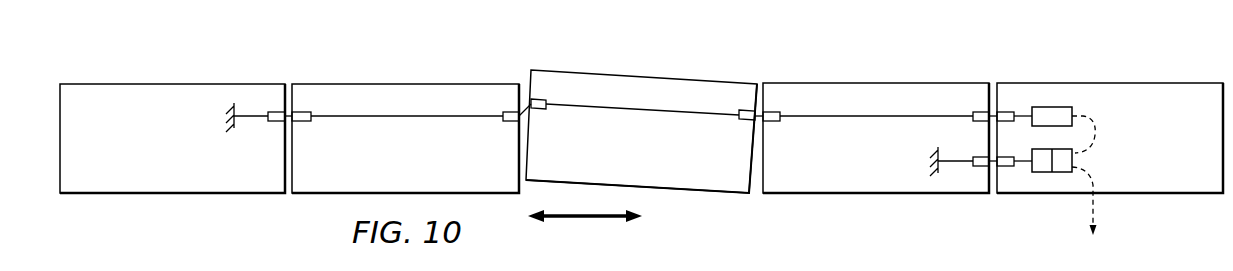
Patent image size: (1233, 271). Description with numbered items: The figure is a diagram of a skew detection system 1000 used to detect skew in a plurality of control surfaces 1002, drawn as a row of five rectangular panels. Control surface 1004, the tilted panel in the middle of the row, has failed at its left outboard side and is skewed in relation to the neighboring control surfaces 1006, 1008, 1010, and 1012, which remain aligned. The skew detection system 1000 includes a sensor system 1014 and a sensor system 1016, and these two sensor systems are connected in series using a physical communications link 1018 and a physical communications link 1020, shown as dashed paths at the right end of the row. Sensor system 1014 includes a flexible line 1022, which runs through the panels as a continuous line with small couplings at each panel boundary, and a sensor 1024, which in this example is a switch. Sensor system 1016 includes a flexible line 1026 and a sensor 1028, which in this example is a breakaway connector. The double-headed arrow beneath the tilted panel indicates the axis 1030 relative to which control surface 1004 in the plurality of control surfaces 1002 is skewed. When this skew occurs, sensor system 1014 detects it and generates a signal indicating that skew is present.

The skew detection system 1000 is at (960, 92).
The plurality of control surfaces 1002 is at (102, 67).
The control surface 1004 is at (645, 75).
The control surface 1006 is at (172, 82).
The control surface 1008 is at (407, 82).
The control surface 1010 is at (830, 82).
The control surface 1012 is at (1135, 82).
The sensor system 1014 is at (1064, 89).
The sensor system 1016 is at (1107, 161).
The physical communications link 1018 is at (1100, 128).
The physical communications link 1020 is at (1097, 210).
The flexible line 1022 is at (838, 120).
The sensor 1024 is at (1043, 107).
The flexible line 1026 is at (952, 163).
The sensor 1028 is at (1040, 173).
The axis 1030 is at (585, 223).